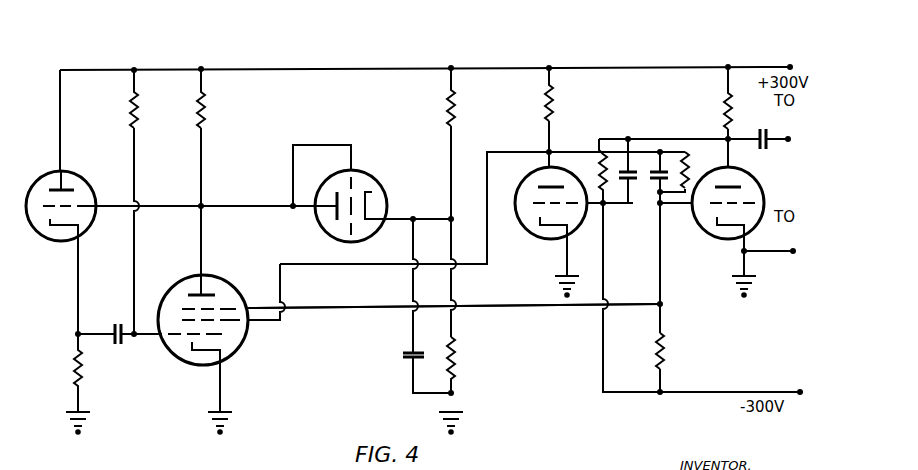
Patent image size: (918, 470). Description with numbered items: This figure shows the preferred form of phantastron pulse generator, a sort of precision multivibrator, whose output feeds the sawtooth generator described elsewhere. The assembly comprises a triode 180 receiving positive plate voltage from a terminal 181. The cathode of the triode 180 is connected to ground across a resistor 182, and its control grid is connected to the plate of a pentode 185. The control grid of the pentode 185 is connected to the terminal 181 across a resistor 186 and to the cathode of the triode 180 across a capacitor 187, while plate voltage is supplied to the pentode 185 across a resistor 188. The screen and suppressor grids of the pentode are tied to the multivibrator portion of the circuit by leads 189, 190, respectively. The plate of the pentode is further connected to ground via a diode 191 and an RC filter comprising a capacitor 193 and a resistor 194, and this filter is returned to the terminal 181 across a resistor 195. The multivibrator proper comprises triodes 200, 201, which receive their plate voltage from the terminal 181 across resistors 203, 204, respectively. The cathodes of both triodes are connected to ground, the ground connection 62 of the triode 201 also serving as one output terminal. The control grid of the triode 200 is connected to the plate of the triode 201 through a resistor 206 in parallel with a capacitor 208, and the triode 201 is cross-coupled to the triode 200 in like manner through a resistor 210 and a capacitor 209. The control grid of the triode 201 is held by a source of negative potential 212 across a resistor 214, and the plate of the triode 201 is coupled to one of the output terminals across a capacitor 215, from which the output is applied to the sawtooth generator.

The ground connection 62 is at (760, 274).
The triode 180 is at (72, 178).
The terminal 181 is at (791, 51).
The resistor 182 is at (82, 381).
The pentode 185 is at (241, 340).
The resistor 186 is at (131, 99).
The capacitor 187 is at (119, 344).
The resistor 188 is at (203, 98).
The lead 189 is at (511, 151).
The lead 190 is at (488, 305).
The diode 191 is at (365, 177).
The capacitor 193 is at (410, 365).
The resistor 194 is at (457, 369).
The resistor 195 is at (448, 95).
The triode 200 is at (547, 240).
The triode 201 is at (754, 175).
The resistor 203 is at (548, 98).
The resistor 204 is at (727, 98).
The resistor 206 is at (599, 156).
The capacitor 208 is at (632, 182).
The capacitor 209 is at (654, 196).
The resistor 210 is at (687, 166).
The source of negative potential 212 is at (800, 392).
The resistor 214 is at (669, 340).
The capacitor 215 is at (764, 148).